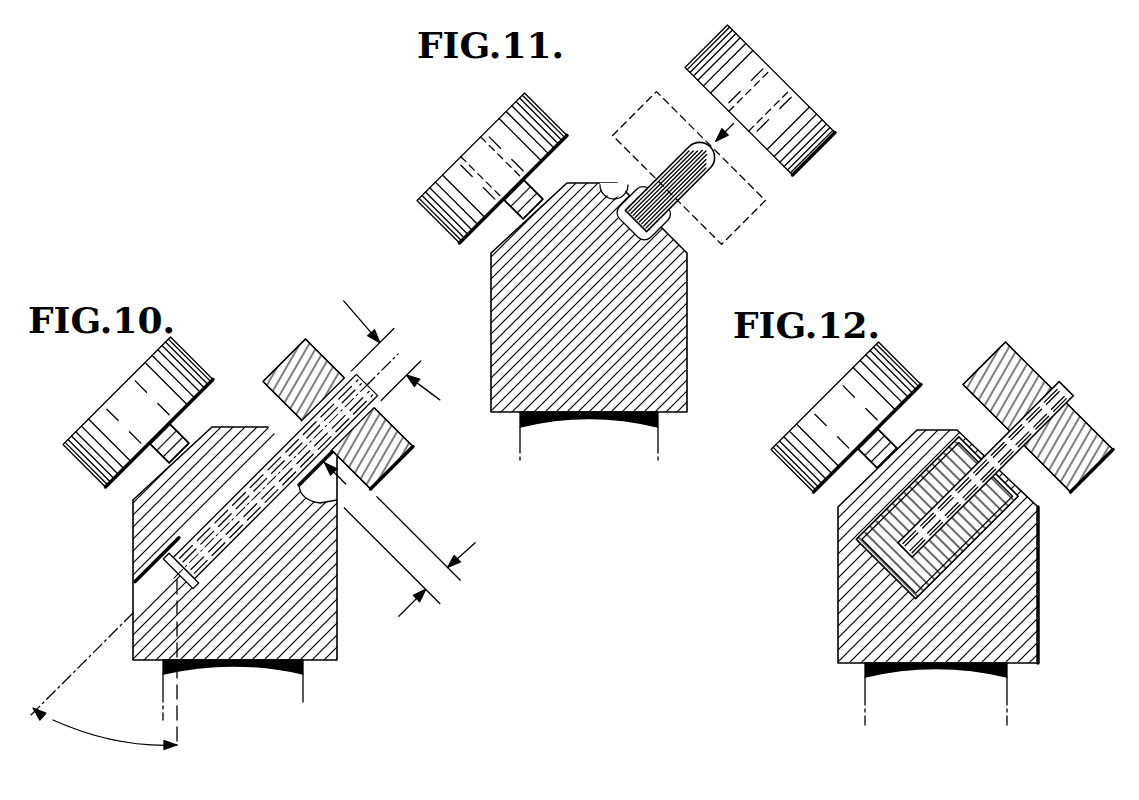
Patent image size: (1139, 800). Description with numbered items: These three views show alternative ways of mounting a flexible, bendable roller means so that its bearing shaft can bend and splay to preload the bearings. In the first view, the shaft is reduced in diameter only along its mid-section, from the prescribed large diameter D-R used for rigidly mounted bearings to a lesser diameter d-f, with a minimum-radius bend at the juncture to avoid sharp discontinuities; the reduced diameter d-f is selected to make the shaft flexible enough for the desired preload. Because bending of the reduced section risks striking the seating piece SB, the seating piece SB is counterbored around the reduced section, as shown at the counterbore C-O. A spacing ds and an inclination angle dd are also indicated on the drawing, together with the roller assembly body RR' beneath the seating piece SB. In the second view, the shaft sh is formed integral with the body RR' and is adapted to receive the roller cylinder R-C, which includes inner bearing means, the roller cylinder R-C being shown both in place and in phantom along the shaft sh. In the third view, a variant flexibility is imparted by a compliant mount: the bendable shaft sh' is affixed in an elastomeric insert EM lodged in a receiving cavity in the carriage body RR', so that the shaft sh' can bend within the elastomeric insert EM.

In FIG. 10, the seating piece SB is at (133, 553).
In FIG. 11, the seating piece SB is at (491, 287).
In FIG. 12, the seating piece SB is at (838, 617).
In FIG. 10, the roller assembly body RR' is at (270, 690).
In FIG. 11, the roller assembly body RR' is at (621, 437).
In FIG. 12, the roller assembly body RR' is at (974, 694).
In FIG. 11, the shaft sh is at (681, 176).
In FIG. 12, the shaft sh' is at (1000, 469).
In FIG. 11, the roller cylinder R-C is at (838, 133).
In FIG. 12, the elastomeric insert EM is at (980, 527).
In FIG. 10, the reduced shaft diameter d-f is at (288, 428).
In FIG. 10, the large shaft diameter D-R is at (383, 352).
In FIG. 10, the disc spacing ds is at (409, 545).
In FIG. 10, the counterbore C-O is at (300, 487).
In FIG. 10, the inclination angle dd is at (47, 718).